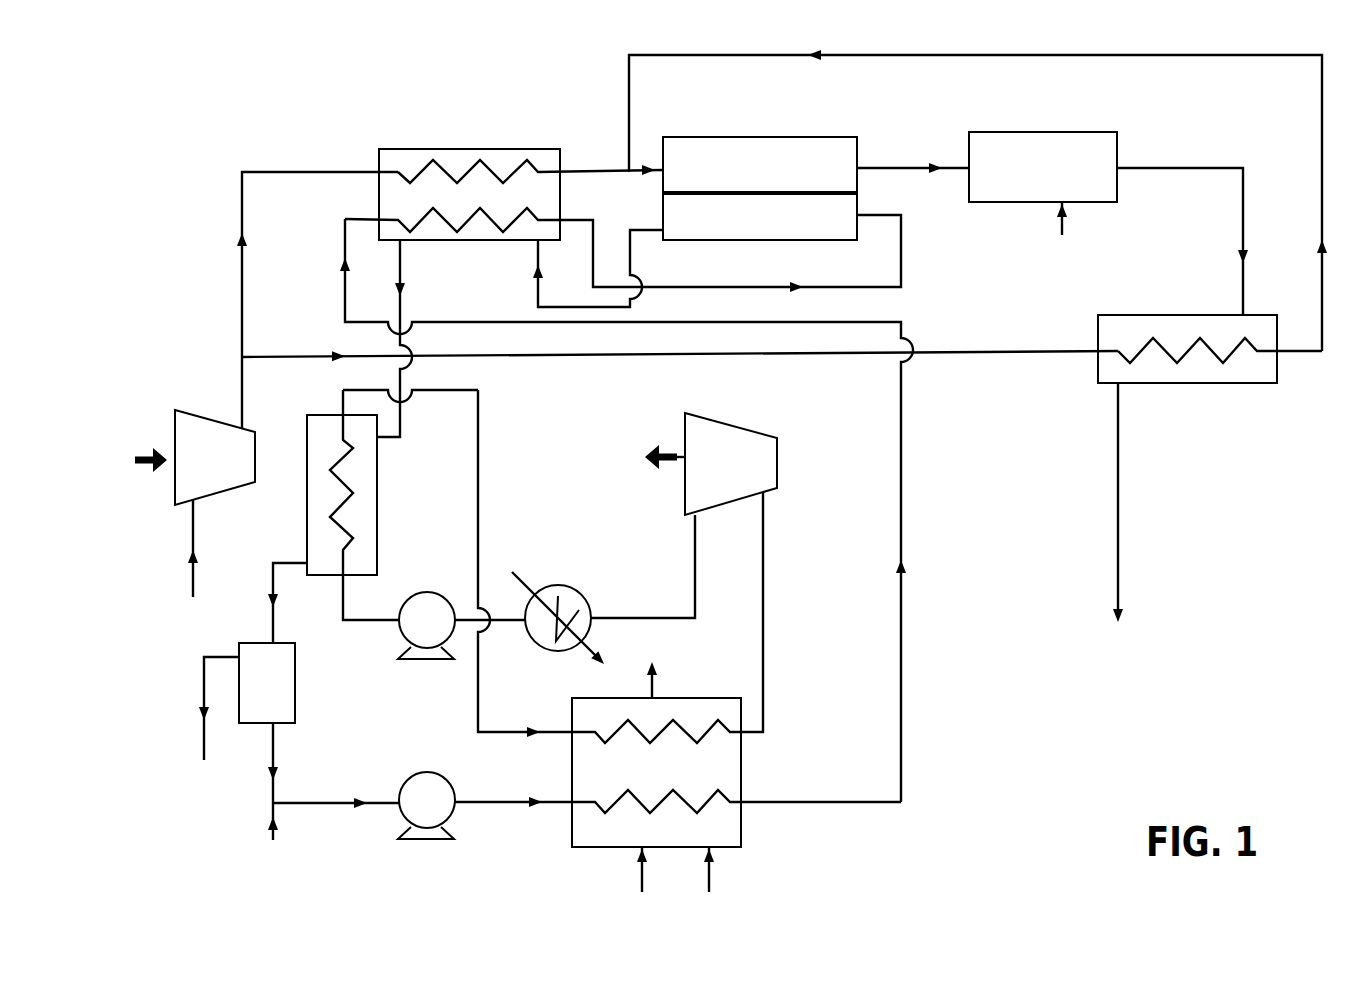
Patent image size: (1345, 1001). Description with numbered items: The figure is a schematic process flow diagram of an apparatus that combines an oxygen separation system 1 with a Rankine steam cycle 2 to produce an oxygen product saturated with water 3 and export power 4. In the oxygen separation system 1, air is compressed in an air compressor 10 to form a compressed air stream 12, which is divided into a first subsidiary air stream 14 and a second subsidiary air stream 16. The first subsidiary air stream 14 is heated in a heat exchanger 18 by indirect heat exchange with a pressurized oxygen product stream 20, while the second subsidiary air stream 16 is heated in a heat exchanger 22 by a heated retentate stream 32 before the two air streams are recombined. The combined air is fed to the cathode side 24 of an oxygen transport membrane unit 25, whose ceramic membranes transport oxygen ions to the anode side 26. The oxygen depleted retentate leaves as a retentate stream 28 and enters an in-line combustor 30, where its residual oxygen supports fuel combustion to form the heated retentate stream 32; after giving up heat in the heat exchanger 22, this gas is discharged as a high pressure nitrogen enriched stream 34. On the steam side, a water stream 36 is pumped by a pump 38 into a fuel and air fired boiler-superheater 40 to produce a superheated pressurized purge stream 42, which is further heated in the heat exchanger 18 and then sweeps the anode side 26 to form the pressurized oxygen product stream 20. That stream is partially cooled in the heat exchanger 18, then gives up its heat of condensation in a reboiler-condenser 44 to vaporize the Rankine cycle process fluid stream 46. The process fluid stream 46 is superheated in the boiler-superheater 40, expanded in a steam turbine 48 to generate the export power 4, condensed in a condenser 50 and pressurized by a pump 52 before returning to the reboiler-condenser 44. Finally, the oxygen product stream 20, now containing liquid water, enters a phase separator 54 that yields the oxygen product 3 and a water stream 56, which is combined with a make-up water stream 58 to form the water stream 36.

The oxygen separation system 1 is at (553, 106).
The Rankine steam cycle 2 is at (804, 454).
The oxygen product 3 is at (204, 737).
The export power 4 is at (652, 470).
The air compressor 10 is at (191, 485).
The compressed air stream 12 is at (242, 385).
The first subsidiary air stream 14 is at (242, 330).
The second subsidiary air stream 16 is at (285, 358).
The heat exchanger 18 is at (470, 149).
The pressurized oxygen product stream 20 is at (537, 287).
The heat exchanger 22 is at (1237, 368).
The cathode side 24 is at (769, 180).
The oxygen transport membrane unit 25 is at (760, 166).
The anode side 26 is at (770, 228).
The retentate stream 28 is at (929, 172).
The in-line combustor 30 is at (1093, 132).
The heated retentate stream 32 is at (1208, 168).
The high pressure nitrogen enriched stream 34 is at (1120, 540).
The water stream 36 is at (332, 808).
The pump 38 is at (427, 785).
The fuel and air fired boiler-superheater 40 is at (582, 838).
The pressurized purge stream 42 is at (903, 718).
The reboiler-condenser 44 is at (378, 507).
The process fluid stream 46 is at (478, 545).
The steam turbine 48 is at (745, 447).
The condenser 50 is at (580, 604).
The pump 52 is at (417, 622).
The phase separator 54 is at (257, 707).
The water stream 56 is at (278, 787).
The make-up water stream 58 is at (273, 810).